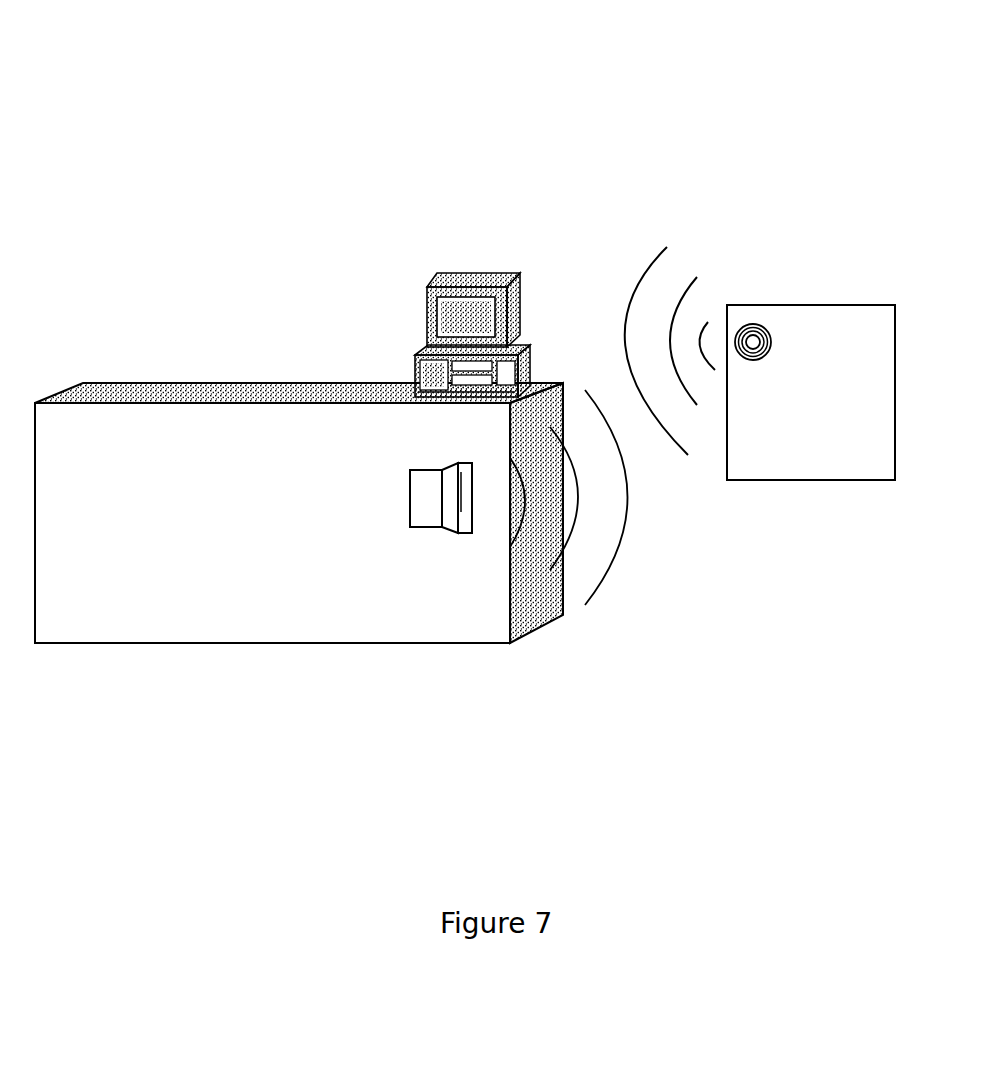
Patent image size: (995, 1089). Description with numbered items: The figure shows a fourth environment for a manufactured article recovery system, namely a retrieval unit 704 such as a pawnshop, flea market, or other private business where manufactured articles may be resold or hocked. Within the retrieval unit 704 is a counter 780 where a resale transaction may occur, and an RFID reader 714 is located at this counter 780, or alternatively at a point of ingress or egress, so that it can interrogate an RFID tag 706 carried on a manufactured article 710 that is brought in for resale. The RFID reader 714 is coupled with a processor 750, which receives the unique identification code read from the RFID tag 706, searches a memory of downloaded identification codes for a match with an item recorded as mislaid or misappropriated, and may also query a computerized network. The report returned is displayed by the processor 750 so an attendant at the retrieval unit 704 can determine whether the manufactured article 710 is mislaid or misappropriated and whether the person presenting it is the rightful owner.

The retrieval unit 704 is at (428, 112).
The counter 780 is at (136, 382).
The RFID reader 714 is at (408, 512).
The processor 750 is at (477, 270).
The manufactured article 710 is at (808, 305).
The RFID tag 706 is at (770, 352).